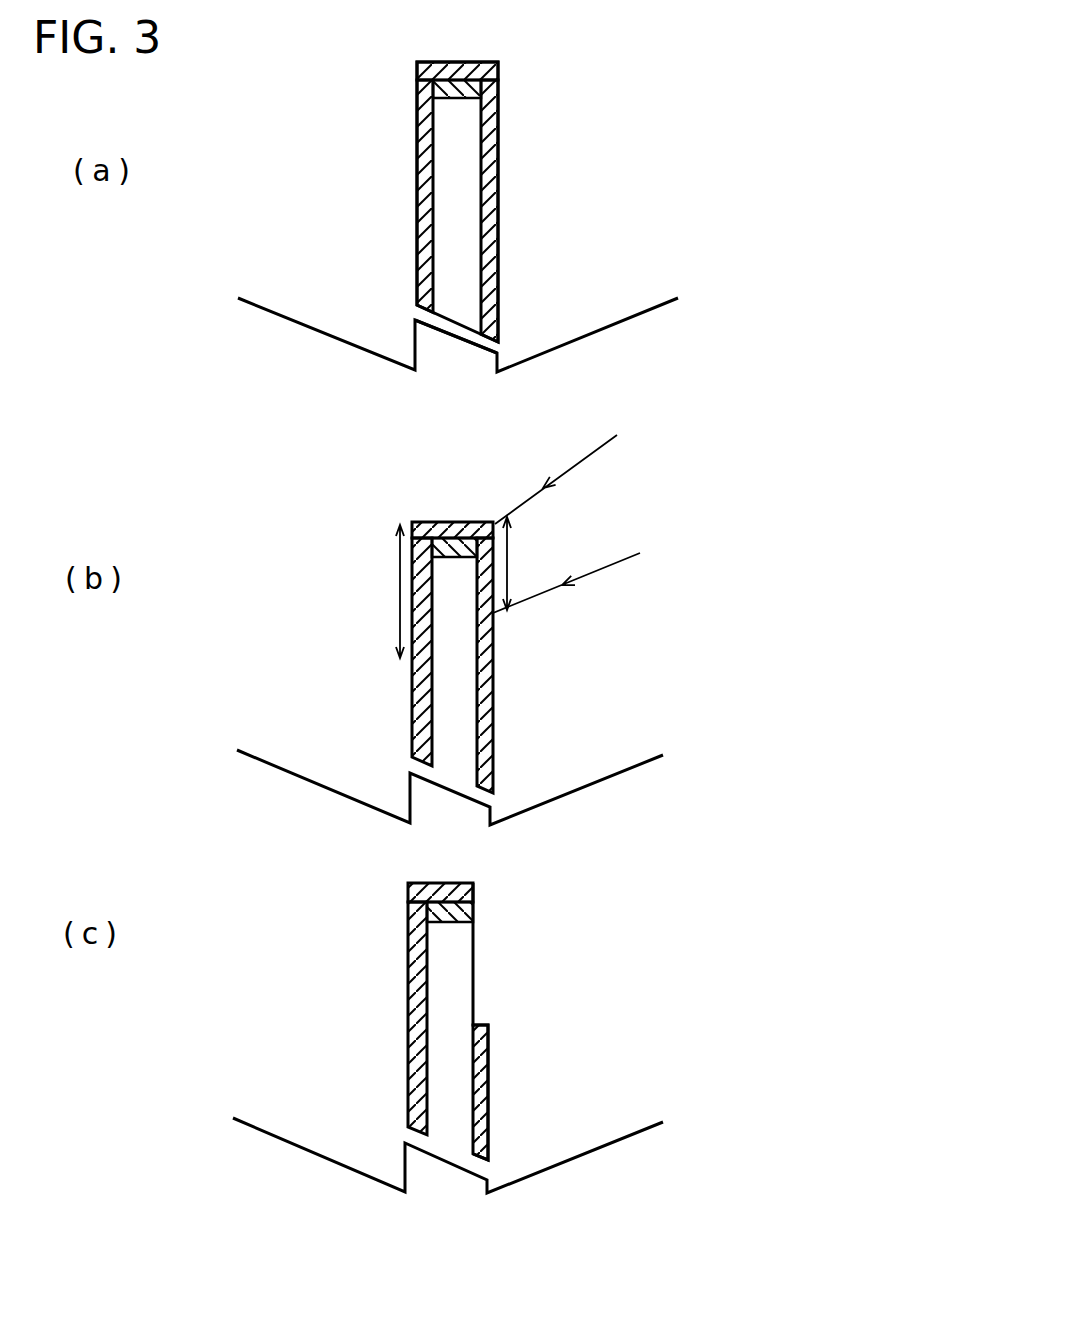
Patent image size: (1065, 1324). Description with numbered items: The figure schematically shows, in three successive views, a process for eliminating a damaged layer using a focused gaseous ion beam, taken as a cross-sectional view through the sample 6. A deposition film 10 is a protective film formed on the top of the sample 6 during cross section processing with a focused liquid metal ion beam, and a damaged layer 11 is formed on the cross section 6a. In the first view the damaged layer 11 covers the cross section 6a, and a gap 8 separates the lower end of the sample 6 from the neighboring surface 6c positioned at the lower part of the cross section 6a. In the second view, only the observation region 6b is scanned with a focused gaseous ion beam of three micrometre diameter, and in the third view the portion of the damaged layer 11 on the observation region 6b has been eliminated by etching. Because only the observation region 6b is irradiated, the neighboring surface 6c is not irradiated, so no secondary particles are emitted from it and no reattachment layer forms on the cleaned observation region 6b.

The sample 6 is at (465, 403).
The cross section 6a is at (417, 240).
The observation region 6b is at (506, 63).
The neighboring surface 6c is at (555, 350).
The gap 8 is at (422, 313).
The deposition film 10 is at (407, 58).
The damaged layer 11 is at (488, 278).